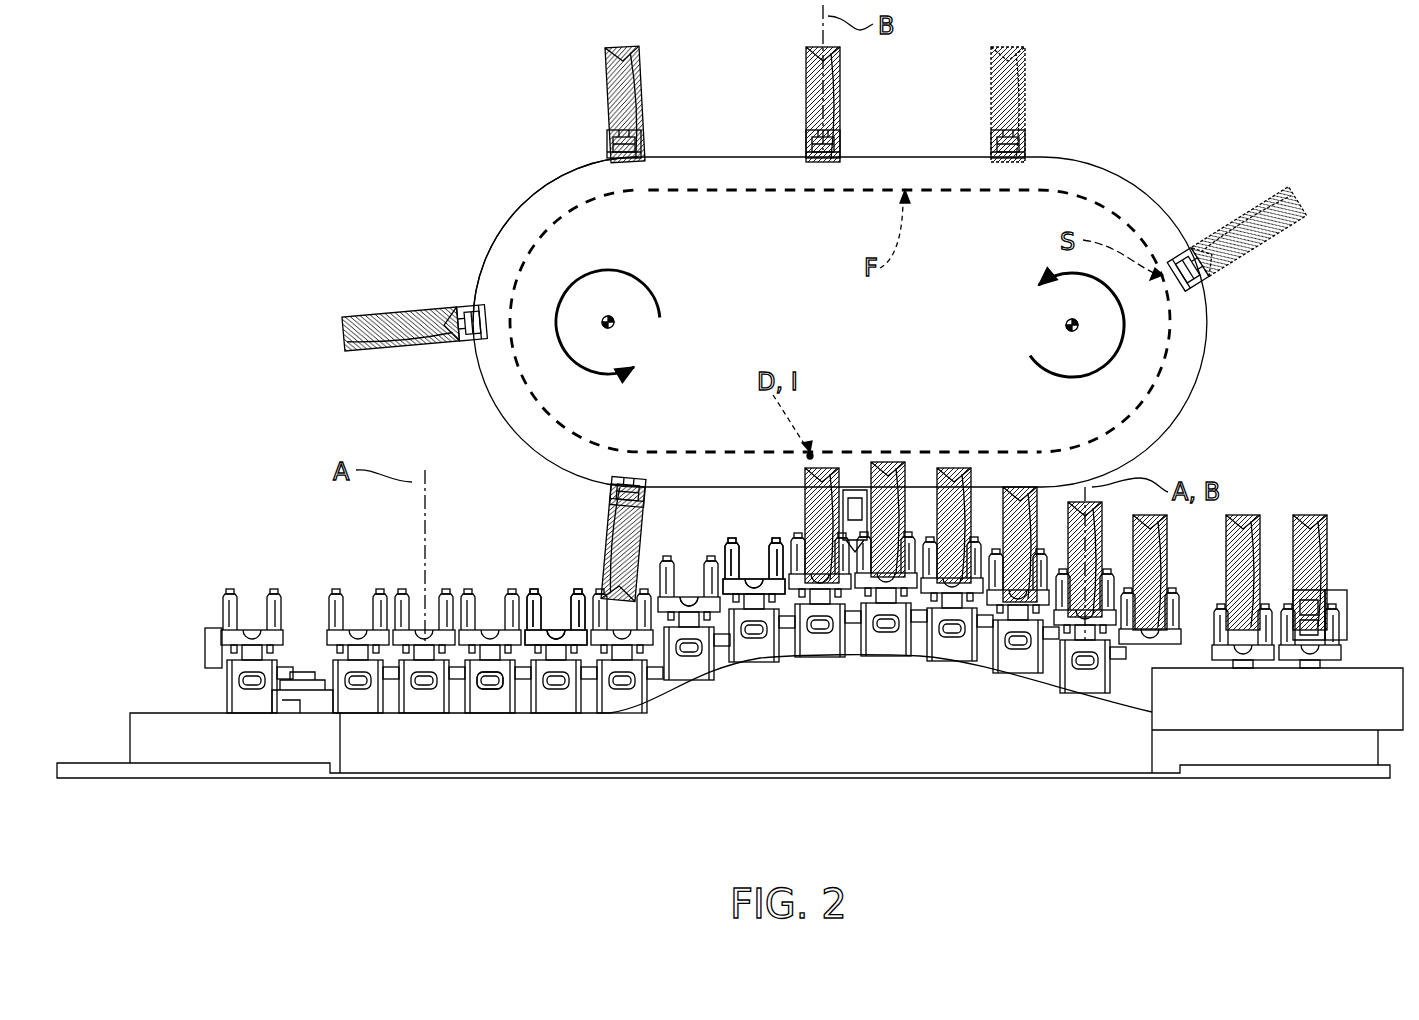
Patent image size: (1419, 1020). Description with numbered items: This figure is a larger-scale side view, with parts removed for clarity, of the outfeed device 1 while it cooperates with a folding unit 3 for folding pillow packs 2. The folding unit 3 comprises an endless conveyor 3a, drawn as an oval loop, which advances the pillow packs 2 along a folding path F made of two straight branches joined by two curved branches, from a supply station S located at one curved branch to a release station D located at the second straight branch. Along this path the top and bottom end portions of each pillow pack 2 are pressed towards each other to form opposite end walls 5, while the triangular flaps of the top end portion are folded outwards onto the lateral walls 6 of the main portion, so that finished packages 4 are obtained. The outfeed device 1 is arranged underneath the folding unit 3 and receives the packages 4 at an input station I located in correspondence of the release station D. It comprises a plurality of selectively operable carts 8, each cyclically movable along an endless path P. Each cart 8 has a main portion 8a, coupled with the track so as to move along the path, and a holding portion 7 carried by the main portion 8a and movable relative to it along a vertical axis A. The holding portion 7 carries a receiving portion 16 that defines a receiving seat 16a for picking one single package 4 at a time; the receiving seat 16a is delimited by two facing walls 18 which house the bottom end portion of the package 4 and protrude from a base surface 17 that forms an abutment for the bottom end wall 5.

The outfeed device 1 is at (180, 490).
The pillow pack 2 is at (1040, 102).
The folding unit 3 is at (1183, 142).
The endless conveyor 3a is at (522, 203).
The package 4 is at (612, 83).
The end wall 5 is at (1336, 518).
The lateral wall 6 is at (1339, 576).
The holding portion 7 is at (246, 666).
The cart 8 is at (311, 667).
The main portion 8a is at (287, 662).
The receiving portion 16 is at (746, 593).
The receiving seat 16a is at (742, 574).
The base surface 17 is at (490, 690).
The wall 18 is at (575, 607).